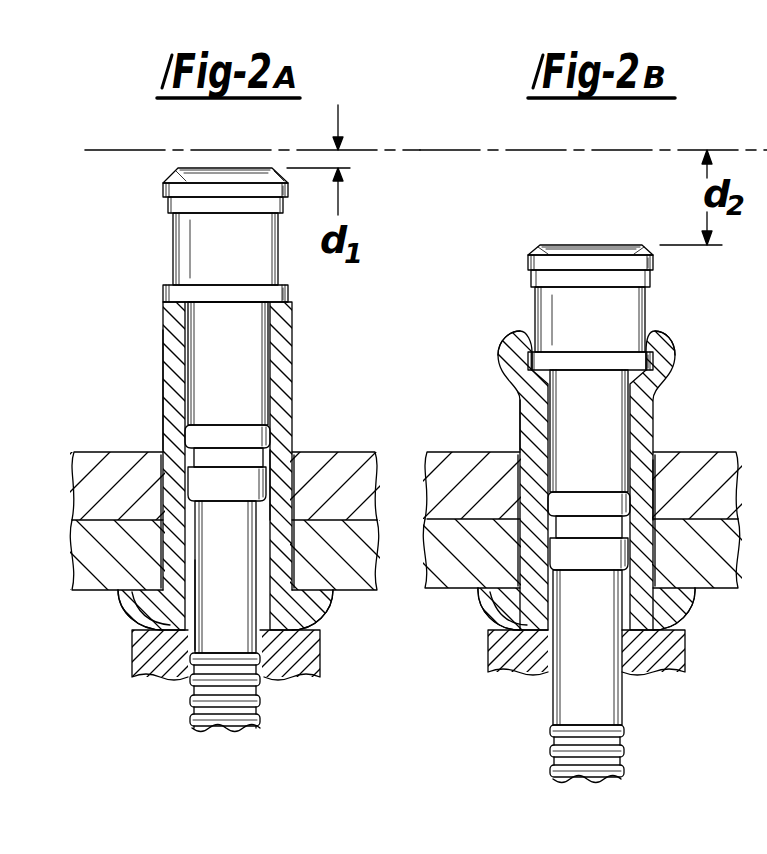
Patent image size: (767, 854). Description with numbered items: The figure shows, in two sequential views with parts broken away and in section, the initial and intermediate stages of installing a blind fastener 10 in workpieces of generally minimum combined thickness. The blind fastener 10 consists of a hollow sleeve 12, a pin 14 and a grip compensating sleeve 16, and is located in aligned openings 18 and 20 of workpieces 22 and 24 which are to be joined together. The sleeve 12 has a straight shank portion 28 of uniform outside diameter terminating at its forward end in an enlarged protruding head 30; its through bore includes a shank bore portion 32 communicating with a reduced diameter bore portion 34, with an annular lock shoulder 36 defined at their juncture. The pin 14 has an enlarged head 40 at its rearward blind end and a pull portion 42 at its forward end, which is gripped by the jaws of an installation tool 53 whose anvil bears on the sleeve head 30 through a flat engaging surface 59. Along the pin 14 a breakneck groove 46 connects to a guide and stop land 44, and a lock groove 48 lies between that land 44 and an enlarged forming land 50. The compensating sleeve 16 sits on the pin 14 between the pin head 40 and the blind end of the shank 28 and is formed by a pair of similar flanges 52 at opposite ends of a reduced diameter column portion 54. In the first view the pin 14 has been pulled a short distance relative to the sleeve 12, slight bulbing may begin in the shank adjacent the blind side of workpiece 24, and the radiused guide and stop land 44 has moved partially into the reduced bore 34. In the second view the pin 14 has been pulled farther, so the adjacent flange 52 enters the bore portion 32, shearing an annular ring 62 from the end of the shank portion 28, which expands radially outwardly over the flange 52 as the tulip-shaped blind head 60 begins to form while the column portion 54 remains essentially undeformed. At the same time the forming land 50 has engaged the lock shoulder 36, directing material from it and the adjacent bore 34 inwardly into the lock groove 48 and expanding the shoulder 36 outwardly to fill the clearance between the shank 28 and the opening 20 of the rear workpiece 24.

In FIG. 2A, the blind fastener 10 is at (302, 299).
In FIG. 2B, the blind fastener 10 is at (513, 317).
In FIG. 2A, the hollow sleeve 12 is at (383, 427).
In FIG. 2B, the hollow sleeve 12 is at (383, 427).
In FIG. 2A, the pin 14 is at (223, 518).
In FIG. 2B, the pin 14 is at (600, 576).
In FIG. 2A, the grip compensating sleeve 16 is at (160, 268).
In FIG. 2B, the grip compensating sleeve 16 is at (529, 288).
In FIG. 2A, the opening 18 is at (160, 532).
In FIG. 2B, the opening 18 is at (520, 530).
In FIG. 2A, the opening 20 is at (165, 470).
In FIG. 2B, the opening 20 is at (520, 470).
In FIG. 2A, the workpiece 22 is at (383, 427).
In FIG. 2B, the workpiece 22 is at (383, 427).
In FIG. 2A, the workpiece 24 is at (90, 456).
In FIG. 2B, the workpiece 24 is at (450, 455).
In FIG. 2A, the shank portion 28 is at (284, 378).
In FIG. 2B, the shank portion 28 is at (525, 401).
In FIG. 2A, the head 30 is at (325, 615).
In FIG. 2B, the head 30 is at (685, 600).
In FIG. 2A, the shank bore portion 32 is at (189, 386).
In FIG. 2B, the shank bore portion 32 is at (549, 426).
In FIG. 2A, the reduced diameter bore portion 34 is at (214, 540).
In FIG. 2A, the lock shoulder 36 is at (266, 500).
In FIG. 2A, the head 40 is at (178, 170).
In FIG. 2B, the head 40 is at (540, 250).
In FIG. 2A, the pull portion 42 is at (193, 690).
In FIG. 2B, the pull portion 42 is at (550, 736).
In FIG. 2A, the guide and stop land 44 is at (240, 496).
In FIG. 2B, the guide and stop land 44 is at (600, 566).
In FIG. 2A, the breakneck groove 46 is at (220, 506).
In FIG. 2B, the breakneck groove 46 is at (580, 576).
In FIG. 2A, the lock groove 48 is at (246, 455).
In FIG. 2B, the lock groove 48 is at (658, 488).
In FIG. 2A, the forming land 50 is at (240, 449).
In FIG. 2B, the forming land 50 is at (602, 515).
In FIG. 2A, the flange 52 is at (288, 286).
In FIG. 2B, the flange 52 is at (651, 278).
In FIG. 2A, the installation tool 53 is at (320, 662).
In FIG. 2B, the installation tool 53 is at (490, 656).
In FIG. 2A, the column portion 54 is at (186, 238).
In FIG. 2B, the column portion 54 is at (582, 295).
In FIG. 2A, the engaging surface 59 is at (165, 628).
In FIG. 2B, the engaging surface 59 is at (525, 626).
In FIG. 2B, the blind head 60 is at (662, 336).
In FIG. 2B, the annular ring 62 is at (665, 382).